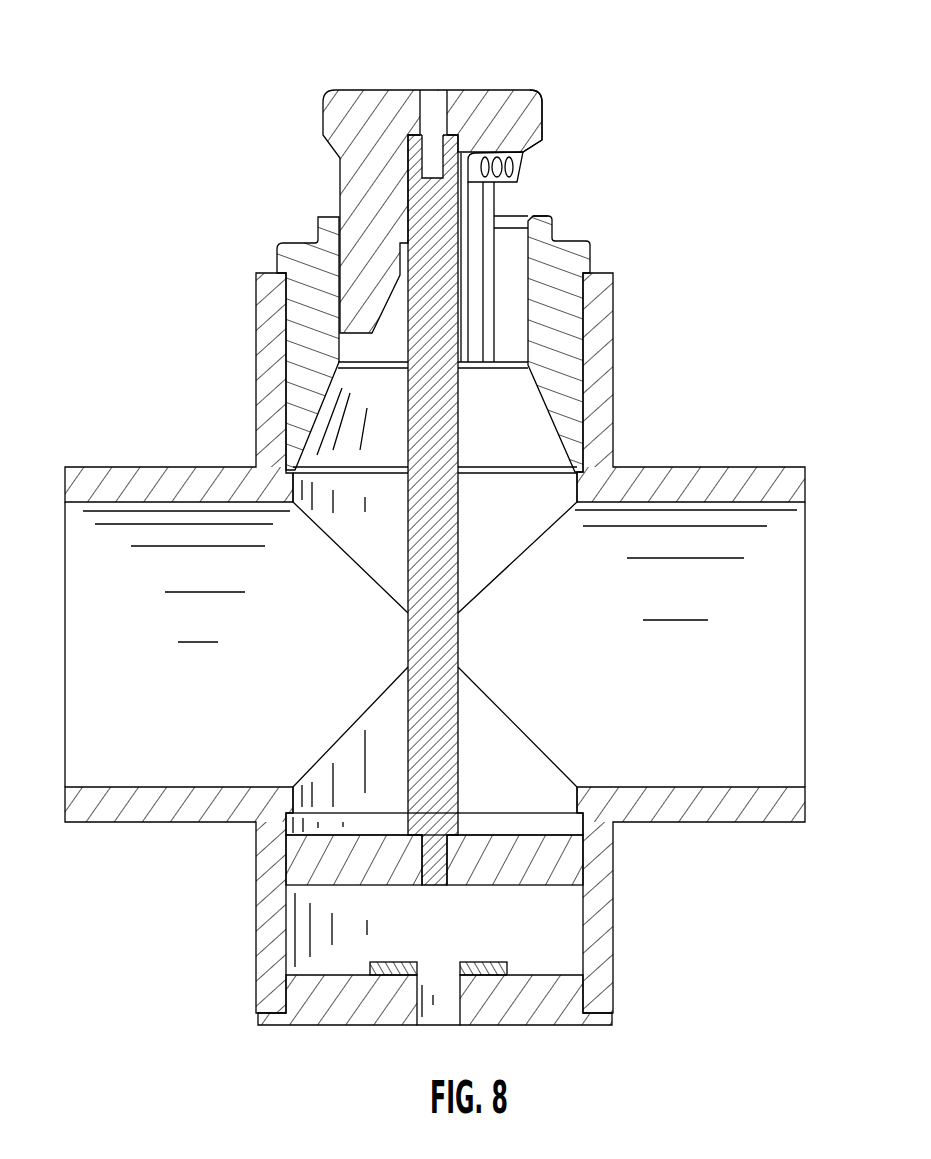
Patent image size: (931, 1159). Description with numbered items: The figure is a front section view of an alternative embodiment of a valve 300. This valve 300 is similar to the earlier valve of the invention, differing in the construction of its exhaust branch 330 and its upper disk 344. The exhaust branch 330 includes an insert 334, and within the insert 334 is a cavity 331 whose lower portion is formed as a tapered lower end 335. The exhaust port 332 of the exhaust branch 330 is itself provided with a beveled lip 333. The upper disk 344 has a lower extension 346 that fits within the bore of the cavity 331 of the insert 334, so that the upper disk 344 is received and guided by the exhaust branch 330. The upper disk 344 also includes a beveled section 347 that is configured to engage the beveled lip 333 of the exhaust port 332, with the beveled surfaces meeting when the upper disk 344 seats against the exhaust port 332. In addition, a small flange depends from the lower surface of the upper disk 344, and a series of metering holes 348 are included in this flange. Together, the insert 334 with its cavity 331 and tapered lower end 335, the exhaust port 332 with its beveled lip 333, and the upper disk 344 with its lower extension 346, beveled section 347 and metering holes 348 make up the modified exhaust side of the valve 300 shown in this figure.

The valve 300 is at (435, 652).
The exhaust branch 330 is at (435, 341).
The cavity 331 is at (517, 333).
The exhaust port 332 is at (543, 239).
The beveled lip 333 is at (545, 217).
The insert 334 is at (558, 280).
The tapered lower end 335 is at (520, 432).
The upper disk 344 is at (483, 100).
The lower extension 346 is at (358, 254).
The beveled section 347 is at (525, 151).
The metering holes 348 is at (543, 99).